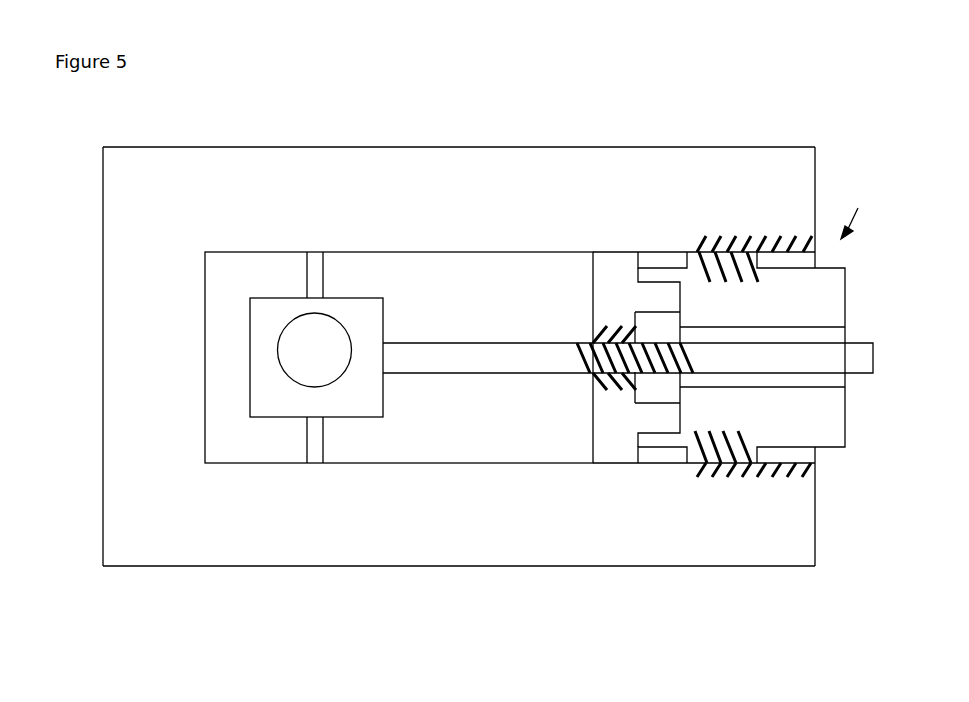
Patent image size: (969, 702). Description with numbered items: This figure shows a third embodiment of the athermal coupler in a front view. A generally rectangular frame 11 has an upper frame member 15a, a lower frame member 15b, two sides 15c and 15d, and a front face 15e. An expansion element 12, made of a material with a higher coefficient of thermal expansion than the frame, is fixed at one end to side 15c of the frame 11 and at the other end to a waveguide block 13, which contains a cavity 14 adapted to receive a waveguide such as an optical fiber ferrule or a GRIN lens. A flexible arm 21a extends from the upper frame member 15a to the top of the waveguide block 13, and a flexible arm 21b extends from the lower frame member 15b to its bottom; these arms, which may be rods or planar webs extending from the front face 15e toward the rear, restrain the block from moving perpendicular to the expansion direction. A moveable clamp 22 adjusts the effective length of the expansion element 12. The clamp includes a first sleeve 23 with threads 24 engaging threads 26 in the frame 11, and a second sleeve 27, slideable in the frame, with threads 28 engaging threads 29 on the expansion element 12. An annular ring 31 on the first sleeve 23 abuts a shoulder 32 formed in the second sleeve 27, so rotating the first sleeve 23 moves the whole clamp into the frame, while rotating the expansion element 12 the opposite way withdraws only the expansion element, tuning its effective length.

The frame 11 is at (451, 323).
The expansion element 12 is at (505, 342).
The waveguide block 13 is at (278, 313).
The cavity 14 is at (293, 357).
The upper frame member 15a is at (288, 147).
The lower frame member 15b is at (147, 566).
The side of the frame 15c is at (102, 254).
The side of the frame 15d is at (814, 188).
The front face 15e is at (160, 495).
The flexible arm 21a is at (323, 267).
The flexible arm 21b is at (307, 448).
The moveable clamp 22 is at (860, 203).
The first sleeve 23 is at (828, 432).
The threads 24 is at (719, 465).
The threads 26 is at (785, 237).
The second sleeve 27 is at (622, 252).
The threads 28 is at (620, 328).
The threads 29 is at (592, 357).
The annular ring 31 is at (652, 450).
The shoulder 32 is at (652, 417).